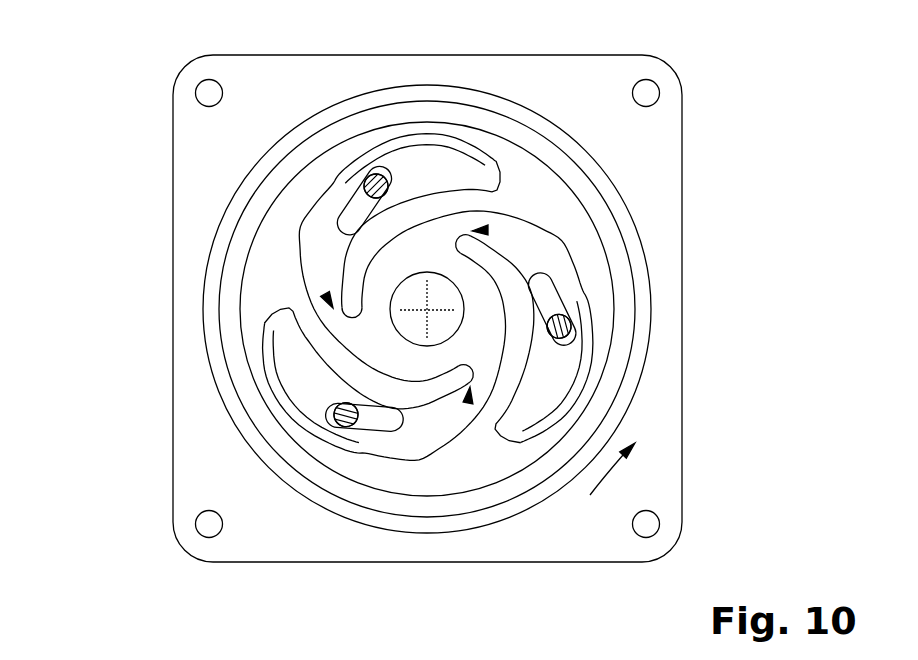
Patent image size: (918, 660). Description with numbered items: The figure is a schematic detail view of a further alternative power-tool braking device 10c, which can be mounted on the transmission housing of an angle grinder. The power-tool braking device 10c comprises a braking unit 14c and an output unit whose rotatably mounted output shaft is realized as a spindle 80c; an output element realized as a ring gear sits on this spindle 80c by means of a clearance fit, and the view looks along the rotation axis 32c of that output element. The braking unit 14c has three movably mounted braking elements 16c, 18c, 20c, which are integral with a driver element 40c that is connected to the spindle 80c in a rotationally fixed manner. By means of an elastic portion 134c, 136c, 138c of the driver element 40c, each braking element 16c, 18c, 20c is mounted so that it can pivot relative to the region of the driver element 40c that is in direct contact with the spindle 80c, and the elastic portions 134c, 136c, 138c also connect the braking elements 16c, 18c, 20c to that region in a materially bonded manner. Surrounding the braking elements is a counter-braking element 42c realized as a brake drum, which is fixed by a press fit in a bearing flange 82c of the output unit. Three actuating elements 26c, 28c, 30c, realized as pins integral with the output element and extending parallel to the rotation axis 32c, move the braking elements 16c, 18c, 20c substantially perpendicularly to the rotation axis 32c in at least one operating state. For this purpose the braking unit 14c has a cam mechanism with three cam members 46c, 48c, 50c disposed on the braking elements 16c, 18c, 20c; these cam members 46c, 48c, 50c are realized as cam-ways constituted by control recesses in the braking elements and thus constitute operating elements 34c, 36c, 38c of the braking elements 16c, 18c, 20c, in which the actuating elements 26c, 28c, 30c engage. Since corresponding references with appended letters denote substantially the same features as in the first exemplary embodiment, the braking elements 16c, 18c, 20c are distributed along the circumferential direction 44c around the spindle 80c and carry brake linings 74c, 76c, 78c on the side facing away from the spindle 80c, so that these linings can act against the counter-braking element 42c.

The power-tool braking device 10c is at (118, 60).
The braking unit 14c is at (140, 312).
The braking element 16c is at (300, 382).
The braking element 18c is at (412, 165).
The braking element 20c is at (550, 391).
The actuating element 26c is at (336, 420).
The actuating element 28c is at (371, 176).
The actuating element 30c is at (567, 327).
The rotation axis 32c is at (427, 311).
The operating element 34c is at (378, 428).
The operating element 36c is at (343, 208).
The operating element 38c is at (546, 288).
The driver element 40c is at (482, 262).
The counter-braking element 42c is at (598, 205).
The rotation direction arrow 44c is at (606, 474).
The cam member 46c is at (347, 424).
The cam member 48c is at (364, 182).
The cam member 50c is at (583, 303).
The third locking recess 74c is at (297, 415).
The first guide rib 76c is at (446, 140).
The second guide rib 78c is at (583, 362).
The spindle 80c is at (437, 340).
The bearing flange 82c is at (660, 103).
The elastic portion 134c is at (468, 404).
The elastic portion 136c is at (325, 294).
The elastic portion 138c is at (484, 230).